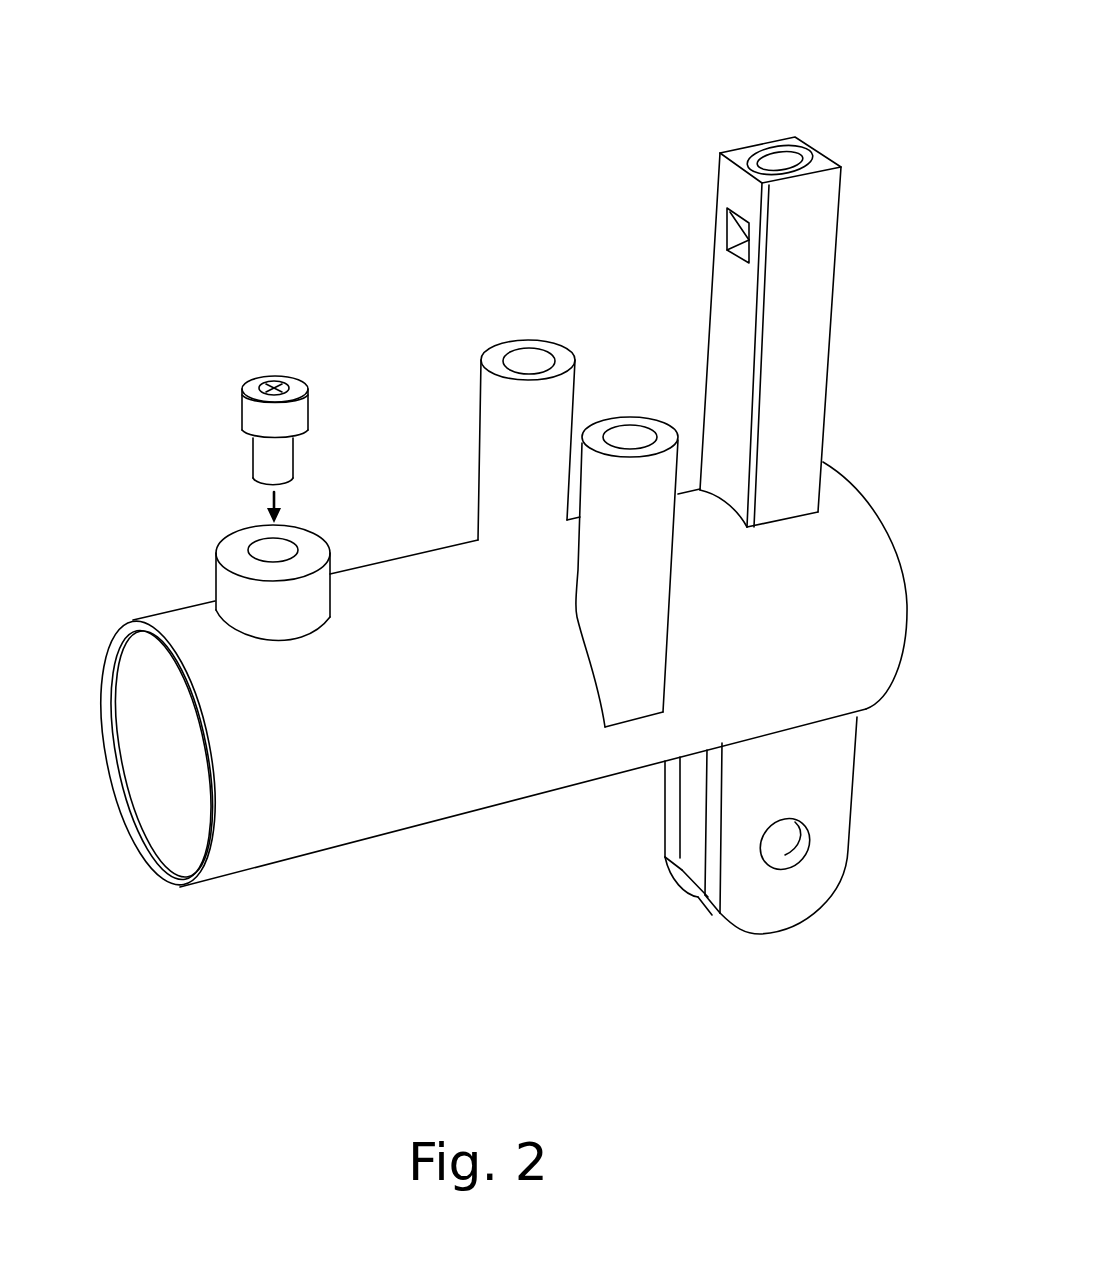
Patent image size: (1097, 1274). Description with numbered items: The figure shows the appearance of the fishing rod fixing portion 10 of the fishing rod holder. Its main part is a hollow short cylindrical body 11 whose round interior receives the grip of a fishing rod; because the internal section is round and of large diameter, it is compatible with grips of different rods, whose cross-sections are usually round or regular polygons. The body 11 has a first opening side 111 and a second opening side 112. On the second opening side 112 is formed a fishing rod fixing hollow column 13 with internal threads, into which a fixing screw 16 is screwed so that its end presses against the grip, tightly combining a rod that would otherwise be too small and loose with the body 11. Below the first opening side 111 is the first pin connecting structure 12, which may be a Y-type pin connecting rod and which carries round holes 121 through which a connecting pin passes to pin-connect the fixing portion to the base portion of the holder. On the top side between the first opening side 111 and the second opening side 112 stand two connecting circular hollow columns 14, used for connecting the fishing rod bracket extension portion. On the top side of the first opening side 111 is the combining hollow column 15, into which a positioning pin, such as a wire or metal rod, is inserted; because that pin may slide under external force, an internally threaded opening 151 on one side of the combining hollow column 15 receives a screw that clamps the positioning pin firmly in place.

The fishing rod fixing portion 10 is at (773, 124).
The hollow short cylindrical body 11 is at (470, 798).
The first opening side 111 is at (863, 488).
The second opening side 112 is at (140, 792).
The first pin connecting structure 12 is at (737, 915).
The round hole 121 is at (783, 852).
The fishing rod fixing hollow column 13 is at (312, 557).
The connecting circular hollow column 14 is at (517, 348).
The combining hollow column 15 is at (803, 380).
The opening 151 is at (728, 222).
The fixing screw 16 is at (297, 388).